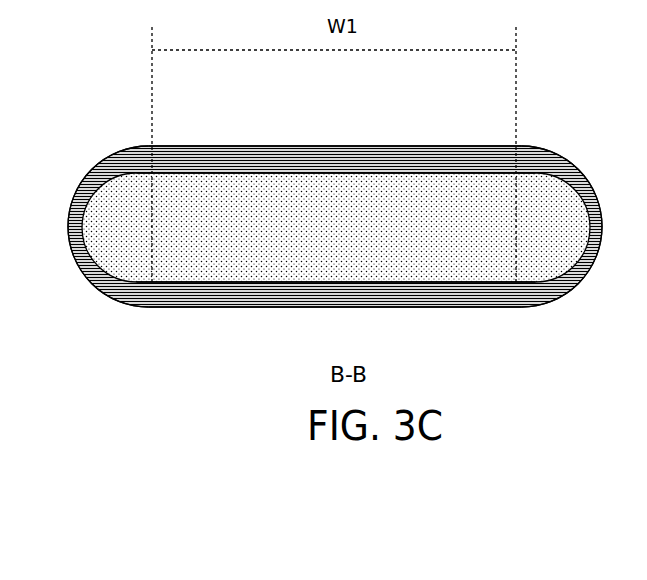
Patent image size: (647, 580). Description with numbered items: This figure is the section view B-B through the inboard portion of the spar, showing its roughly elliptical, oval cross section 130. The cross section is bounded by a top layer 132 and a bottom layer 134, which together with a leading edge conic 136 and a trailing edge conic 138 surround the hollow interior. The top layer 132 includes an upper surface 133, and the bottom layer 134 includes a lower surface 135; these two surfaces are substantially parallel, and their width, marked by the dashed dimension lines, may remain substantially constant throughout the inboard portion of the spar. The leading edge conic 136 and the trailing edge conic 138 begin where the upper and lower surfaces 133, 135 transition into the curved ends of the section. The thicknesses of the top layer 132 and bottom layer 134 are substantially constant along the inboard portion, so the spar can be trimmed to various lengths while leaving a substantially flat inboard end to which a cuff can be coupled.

The electrode assembly 130 is at (530, 127).
The top layer 132 is at (187, 147).
The upper surface 133 is at (286, 147).
The bottom layer 134 is at (187, 308).
The lower surface 135 is at (295, 308).
The leading edge conic 136 is at (73, 198).
The trailing edge conic 138 is at (585, 272).